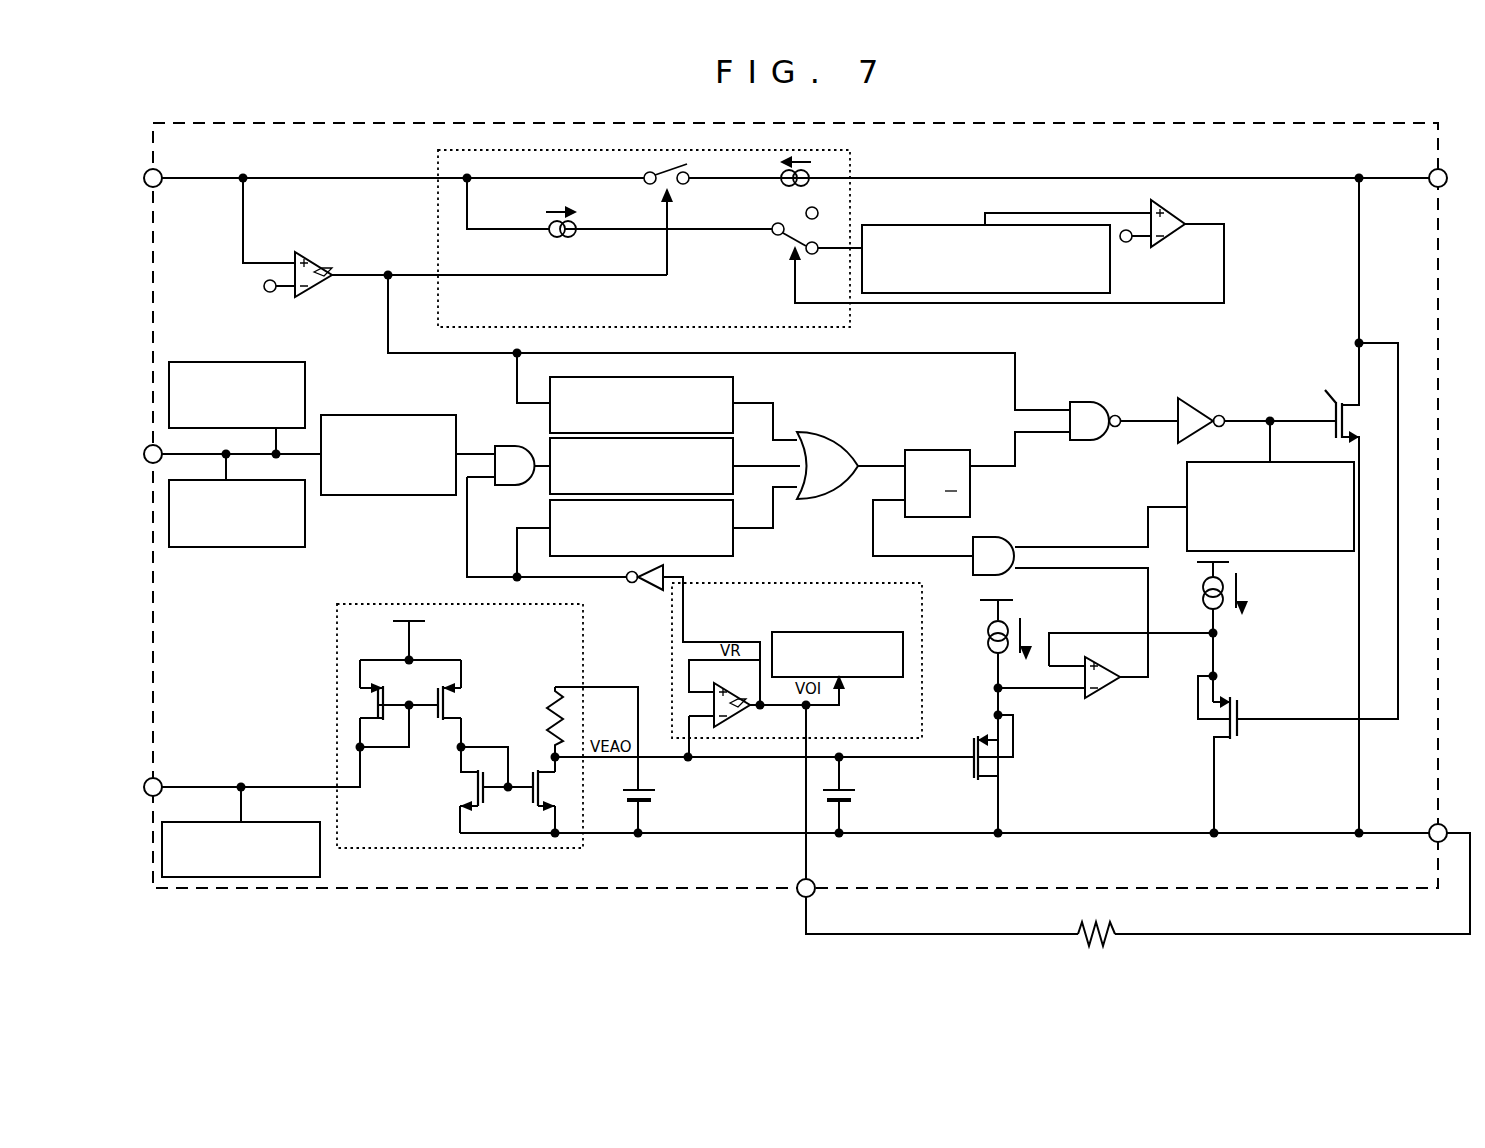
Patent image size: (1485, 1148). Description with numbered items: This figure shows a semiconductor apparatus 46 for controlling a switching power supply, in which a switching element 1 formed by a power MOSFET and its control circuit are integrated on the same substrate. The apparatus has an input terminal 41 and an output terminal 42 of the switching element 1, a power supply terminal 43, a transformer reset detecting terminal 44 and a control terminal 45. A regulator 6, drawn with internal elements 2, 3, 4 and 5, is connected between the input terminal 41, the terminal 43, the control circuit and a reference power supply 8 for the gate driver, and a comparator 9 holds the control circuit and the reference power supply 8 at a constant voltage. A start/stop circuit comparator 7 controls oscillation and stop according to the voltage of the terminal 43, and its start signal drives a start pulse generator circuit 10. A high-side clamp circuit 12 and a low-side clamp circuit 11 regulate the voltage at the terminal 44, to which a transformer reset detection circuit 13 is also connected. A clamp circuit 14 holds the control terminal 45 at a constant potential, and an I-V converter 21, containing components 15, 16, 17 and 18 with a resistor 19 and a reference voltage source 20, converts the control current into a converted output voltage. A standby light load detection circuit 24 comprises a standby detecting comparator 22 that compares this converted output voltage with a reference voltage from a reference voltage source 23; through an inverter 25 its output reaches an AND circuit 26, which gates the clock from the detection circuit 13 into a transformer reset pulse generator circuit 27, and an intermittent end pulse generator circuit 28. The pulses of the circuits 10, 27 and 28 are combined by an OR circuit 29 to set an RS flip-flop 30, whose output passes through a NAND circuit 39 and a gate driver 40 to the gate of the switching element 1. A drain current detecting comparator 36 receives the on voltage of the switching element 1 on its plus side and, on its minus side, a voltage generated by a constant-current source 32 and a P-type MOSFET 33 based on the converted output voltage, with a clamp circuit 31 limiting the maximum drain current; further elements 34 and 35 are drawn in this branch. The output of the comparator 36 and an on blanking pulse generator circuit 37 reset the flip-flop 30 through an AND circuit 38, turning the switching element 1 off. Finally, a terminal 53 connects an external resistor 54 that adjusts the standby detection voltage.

The switching element 1 is at (1362, 421).
The current source 2 is at (789, 187).
The switch 3 is at (647, 173).
The current source 4 is at (553, 241).
The switch 5 is at (777, 240).
The regulator 6 is at (790, 150).
The start/stop circuit comparator 7 is at (312, 256).
The reference power supply for gate driver 8 is at (1112, 276).
The comparator 9 is at (1173, 232).
The start pulse generator circuit 10 is at (735, 385).
The low-side clamp circuit 11 is at (306, 507).
The high-side clamp circuit 12 is at (306, 404).
The transformer reset detection circuit 13 is at (376, 415).
The clamp circuit 14 is at (262, 822).
The transistor 15 is at (356, 703).
The transistor 16 is at (465, 703).
The transistor 17 is at (451, 788).
The transistor 18 is at (558, 788).
The resistor 19 is at (551, 724).
The reference voltage source 20 is at (655, 796).
The I-V converter 21 is at (584, 628).
The standby detecting comparator 22 is at (742, 718).
The reference voltage source 23 is at (858, 680).
The standby light load detection circuit 24 is at (924, 720).
The inverter 25 is at (631, 572).
The AND circuit 26 is at (505, 446).
The transformer reset pulse generator circuit 27 is at (736, 458).
The intermittent end pulse generator circuit 28 is at (736, 520).
The OR circuit 29 is at (850, 442).
The RS flip-flop 30 is at (918, 450).
The clamp circuit 31 is at (845, 790).
The constant-current source 32 is at (986, 637).
The P-type MOSFET 33 is at (980, 734).
The current source 34 is at (1202, 596).
The transistor 35 is at (1220, 726).
The drain current detecting comparator 36 is at (1114, 671).
The on blanking pulse generator circuit 37 is at (1272, 552).
The AND circuit 38 is at (1000, 537).
The NAND circuit 39 is at (1083, 441).
The gate driver 40 is at (1190, 443).
The input terminal 41 is at (1443, 169).
The output terminal 42 is at (1443, 824).
The power supply terminal 43 is at (144, 178).
The transformer reset detecting terminal 44 is at (144, 454).
The control terminal 45 is at (144, 787).
The semiconductor apparatus for controlling a switching power supply 46 is at (1325, 122).
The terminal 53 is at (797, 884).
The resistor for adjusting standby detection voltage 54 is at (1120, 926).